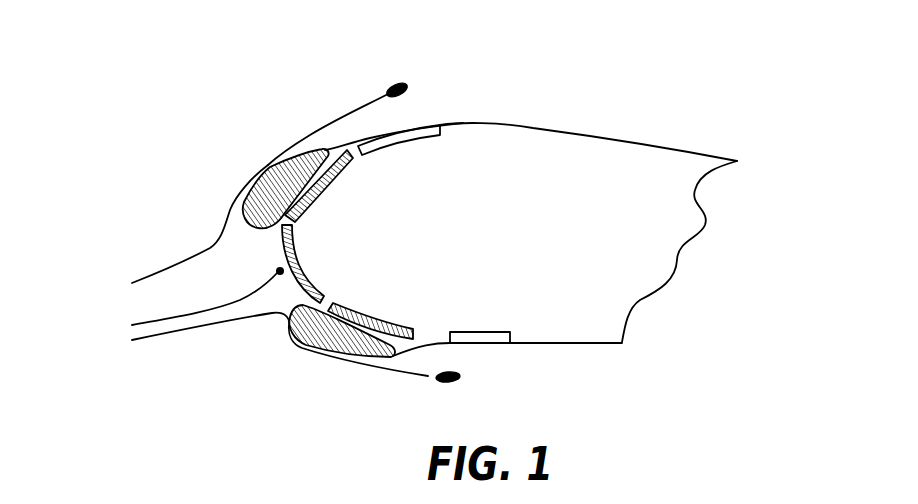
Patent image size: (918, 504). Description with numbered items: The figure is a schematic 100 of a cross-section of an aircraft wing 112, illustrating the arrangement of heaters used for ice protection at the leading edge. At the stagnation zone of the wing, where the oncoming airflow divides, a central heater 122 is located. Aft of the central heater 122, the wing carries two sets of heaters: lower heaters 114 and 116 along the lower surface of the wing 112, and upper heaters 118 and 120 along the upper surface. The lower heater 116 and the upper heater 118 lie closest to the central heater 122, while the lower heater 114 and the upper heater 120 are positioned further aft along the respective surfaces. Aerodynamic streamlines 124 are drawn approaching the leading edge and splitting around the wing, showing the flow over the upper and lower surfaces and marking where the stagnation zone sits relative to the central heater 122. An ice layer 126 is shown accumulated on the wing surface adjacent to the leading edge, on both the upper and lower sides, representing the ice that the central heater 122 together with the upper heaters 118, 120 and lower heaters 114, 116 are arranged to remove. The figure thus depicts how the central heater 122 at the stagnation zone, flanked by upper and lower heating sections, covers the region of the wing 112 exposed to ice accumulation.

The schematic 100 is at (547, 211).
The aircraft wing 112 is at (615, 247).
The lower heater 114 is at (497, 345).
The lower heater 116 is at (378, 305).
The upper heater 118 is at (330, 185).
The upper heater 120 is at (430, 120).
The central heater 122 is at (255, 250).
The aerodynamic streamlines 124 is at (181, 343).
The ice layer 126 is at (264, 170).